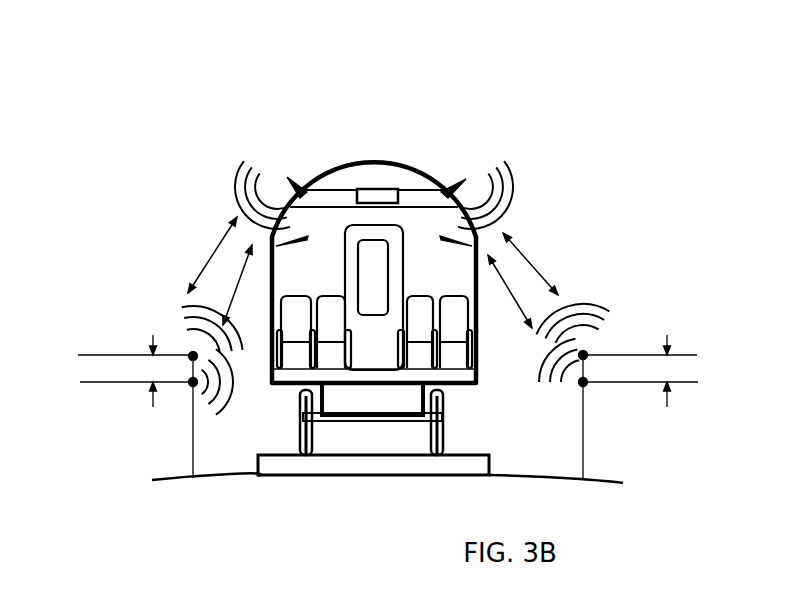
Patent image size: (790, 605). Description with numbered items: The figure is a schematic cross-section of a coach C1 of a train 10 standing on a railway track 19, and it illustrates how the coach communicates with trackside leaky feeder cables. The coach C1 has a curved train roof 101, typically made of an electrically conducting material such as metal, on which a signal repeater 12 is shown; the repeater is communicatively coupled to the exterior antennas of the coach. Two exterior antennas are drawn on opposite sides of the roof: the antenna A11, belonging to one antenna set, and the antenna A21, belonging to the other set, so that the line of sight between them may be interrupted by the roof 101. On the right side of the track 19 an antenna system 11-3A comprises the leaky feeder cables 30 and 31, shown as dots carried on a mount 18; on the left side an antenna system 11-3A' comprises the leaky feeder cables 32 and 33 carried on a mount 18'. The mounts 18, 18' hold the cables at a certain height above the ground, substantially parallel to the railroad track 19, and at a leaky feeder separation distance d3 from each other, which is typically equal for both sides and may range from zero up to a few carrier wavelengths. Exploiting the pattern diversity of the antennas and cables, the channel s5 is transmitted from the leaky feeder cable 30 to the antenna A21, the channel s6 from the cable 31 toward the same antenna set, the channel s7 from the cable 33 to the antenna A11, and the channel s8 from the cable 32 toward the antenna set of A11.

The train 10 is at (398, 38).
The train roof 101 is at (330, 168).
The signal repeater 12 is at (378, 190).
The coach C1 is at (484, 346).
The antenna A11 is at (288, 184).
The antenna A21 is at (460, 187).
The channel s7 is at (209, 255).
The channel s8 is at (244, 285).
The channel s5 is at (534, 264).
The channel s6 is at (510, 291).
The leaky feeder cable 33 is at (191, 353).
The leaky feeder cable 32 is at (193, 410).
The leaky feeder cable 31 is at (586, 351).
The leaky feeder cable 30 is at (580, 393).
The antenna system 11-3A' is at (120, 417).
The antenna system 11-3A is at (613, 416).
The leaky feeder separation distance d3 is at (388, 381).
The railway track 19 is at (440, 452).
The mount 18' is at (193, 461).
The mount 18 is at (572, 460).